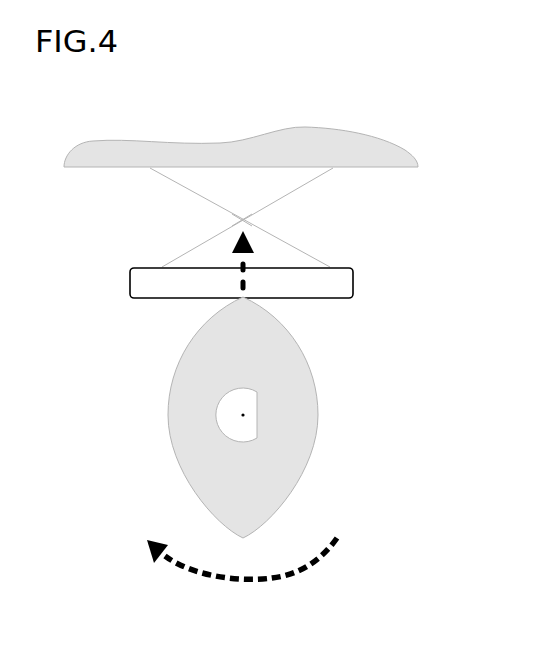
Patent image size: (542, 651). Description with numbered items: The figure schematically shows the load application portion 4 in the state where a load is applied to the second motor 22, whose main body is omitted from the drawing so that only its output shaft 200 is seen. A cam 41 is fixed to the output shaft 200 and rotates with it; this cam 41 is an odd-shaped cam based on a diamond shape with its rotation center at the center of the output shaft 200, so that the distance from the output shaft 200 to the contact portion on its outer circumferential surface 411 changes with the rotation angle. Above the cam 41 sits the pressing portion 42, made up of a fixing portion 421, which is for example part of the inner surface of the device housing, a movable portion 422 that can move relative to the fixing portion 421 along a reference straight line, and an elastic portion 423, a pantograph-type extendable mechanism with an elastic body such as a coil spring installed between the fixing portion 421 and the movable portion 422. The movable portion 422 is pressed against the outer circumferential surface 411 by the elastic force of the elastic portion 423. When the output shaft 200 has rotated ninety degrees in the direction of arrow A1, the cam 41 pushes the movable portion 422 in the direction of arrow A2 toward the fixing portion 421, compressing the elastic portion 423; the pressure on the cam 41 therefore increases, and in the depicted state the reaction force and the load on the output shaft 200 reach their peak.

The load application portion 4 is at (103, 131).
The pressing portion 42 is at (286, 233).
The fixing portion 421 is at (342, 168).
The elastic portion 423 is at (258, 213).
The movable portion 422 is at (266, 278).
The arrow A2 is at (240, 265).
The cam 41 is at (275, 417).
The outer circumferential surface 411 is at (310, 392).
The second motor 22 is at (230, 402).
The output shaft 200 is at (228, 423).
The arrow A1 is at (303, 562).